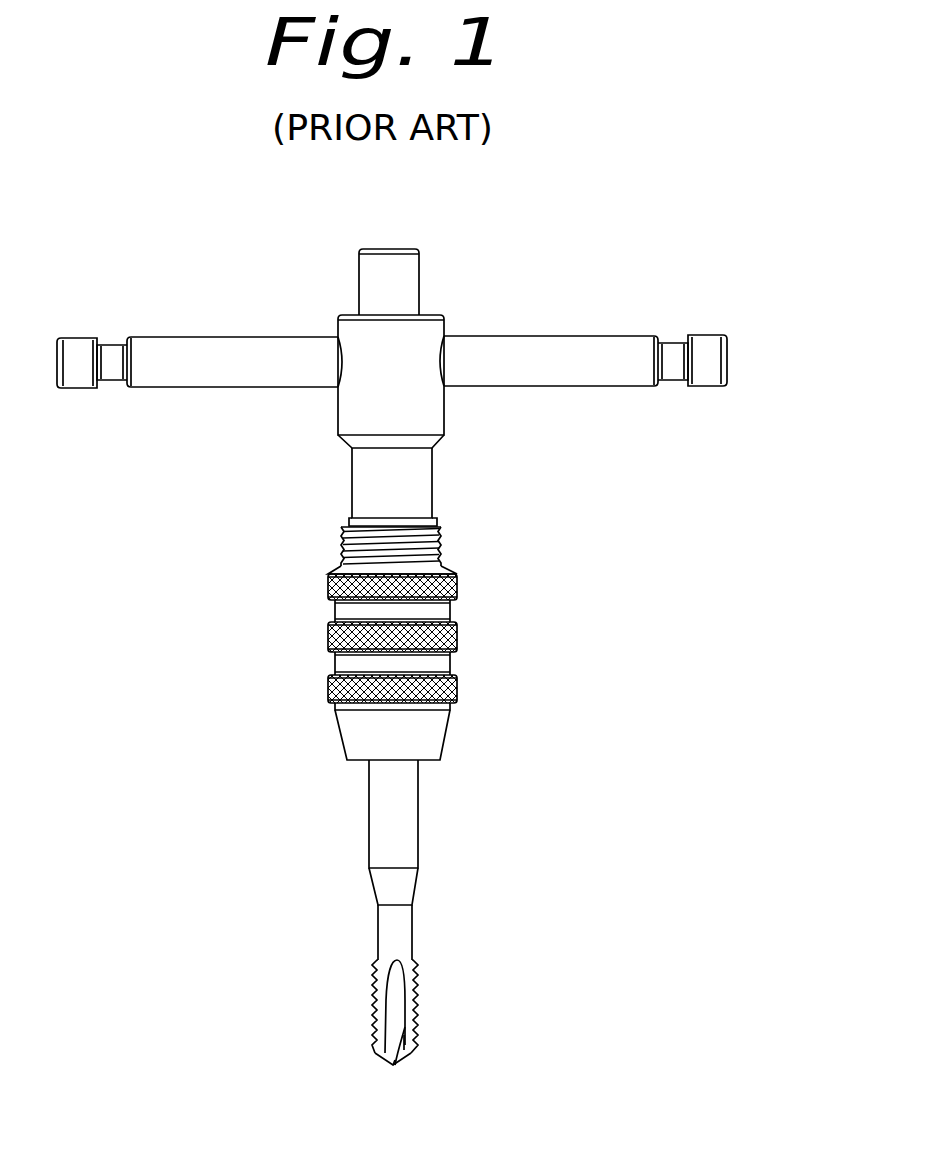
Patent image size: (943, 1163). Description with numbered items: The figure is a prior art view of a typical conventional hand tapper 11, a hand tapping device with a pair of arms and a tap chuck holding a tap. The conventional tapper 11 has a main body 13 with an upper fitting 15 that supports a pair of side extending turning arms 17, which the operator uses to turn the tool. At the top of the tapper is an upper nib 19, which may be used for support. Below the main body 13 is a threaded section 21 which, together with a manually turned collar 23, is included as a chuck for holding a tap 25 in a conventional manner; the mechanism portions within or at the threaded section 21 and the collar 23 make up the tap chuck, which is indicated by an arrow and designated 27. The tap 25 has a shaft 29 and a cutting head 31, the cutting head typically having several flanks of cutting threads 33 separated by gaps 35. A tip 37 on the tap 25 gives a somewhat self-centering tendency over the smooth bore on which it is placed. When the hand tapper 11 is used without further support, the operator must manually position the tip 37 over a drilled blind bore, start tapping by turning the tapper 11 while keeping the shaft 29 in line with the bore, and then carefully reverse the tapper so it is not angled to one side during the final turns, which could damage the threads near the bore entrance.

The hand tapper 11 is at (212, 668).
The main body 13 is at (424, 488).
The upper fitting 15 is at (417, 392).
The turning arms 17 is at (207, 345).
The upper nib 19 is at (413, 282).
The threaded section 21 is at (438, 540).
The manually turned collar 23 is at (455, 636).
The tap 25 is at (358, 851).
The tap chuck 27 is at (310, 626).
The shaft 29 is at (418, 823).
The cutting head 31 is at (428, 988).
The cutting threads 33 is at (374, 1000).
The gaps 35 is at (393, 1063).
The tip 37 is at (395, 1065).